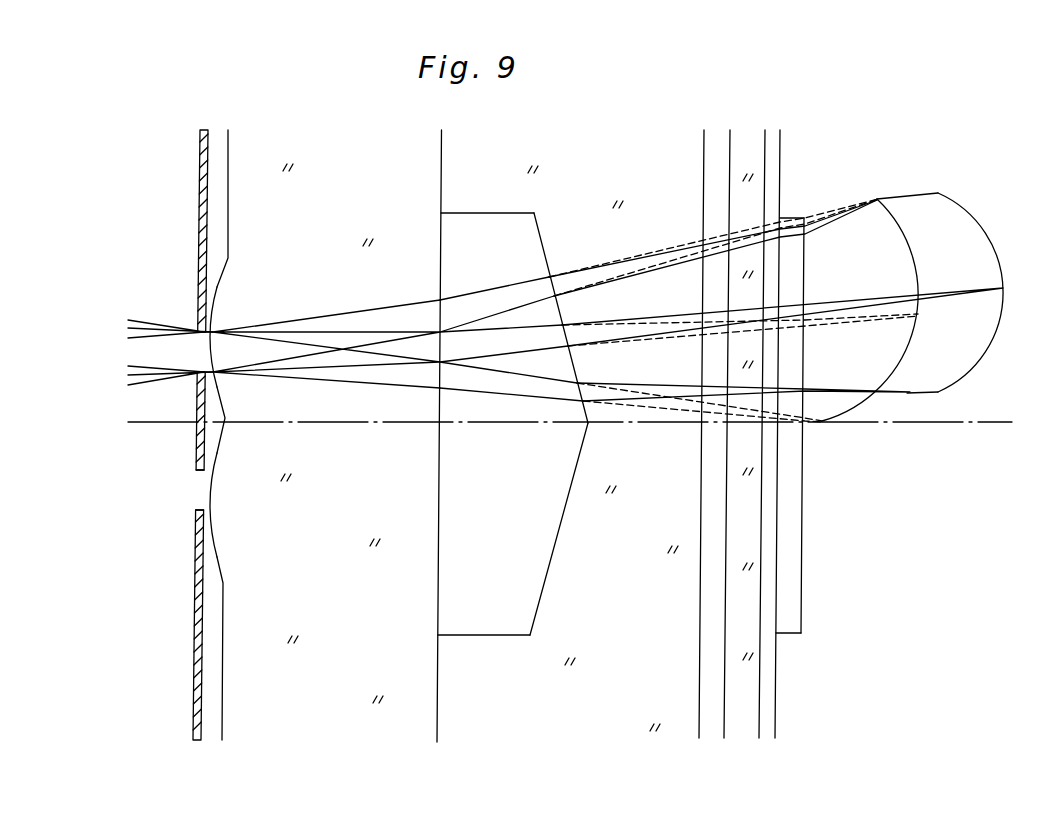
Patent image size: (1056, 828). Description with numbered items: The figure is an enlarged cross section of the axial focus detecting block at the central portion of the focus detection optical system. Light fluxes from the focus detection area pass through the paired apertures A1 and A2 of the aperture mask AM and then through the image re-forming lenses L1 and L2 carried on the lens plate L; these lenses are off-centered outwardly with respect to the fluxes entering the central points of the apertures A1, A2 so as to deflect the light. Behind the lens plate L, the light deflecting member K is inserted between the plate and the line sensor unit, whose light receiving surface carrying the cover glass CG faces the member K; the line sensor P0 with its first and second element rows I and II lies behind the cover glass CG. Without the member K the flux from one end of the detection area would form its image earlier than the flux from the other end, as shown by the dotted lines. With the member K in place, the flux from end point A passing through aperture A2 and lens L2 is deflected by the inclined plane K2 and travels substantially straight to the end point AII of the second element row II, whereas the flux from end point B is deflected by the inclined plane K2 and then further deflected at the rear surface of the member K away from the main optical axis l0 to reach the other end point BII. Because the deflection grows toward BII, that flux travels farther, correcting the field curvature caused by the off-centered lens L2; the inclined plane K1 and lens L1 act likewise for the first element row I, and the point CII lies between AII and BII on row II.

The lens plate L is at (226, 128).
The aperture mask AM is at (200, 169).
The image re-forming lens L2 is at (212, 283).
The image re-forming lens L1 is at (215, 560).
The aperture A2 is at (197, 344).
The aperture A1 is at (197, 487).
The light deflecting member K is at (705, 143).
The inclined plane K2 is at (545, 264).
The inclined plane K1 is at (560, 518).
The cover glass CG is at (744, 143).
The second element row II is at (803, 279).
The first element row I is at (802, 518).
The line sensor P0 is at (802, 613).
The end point of the second element row BII is at (802, 232).
The middle image point CII is at (797, 321).
The end point of the second element row AII is at (803, 430).
The main optical axis l0 is at (577, 415).